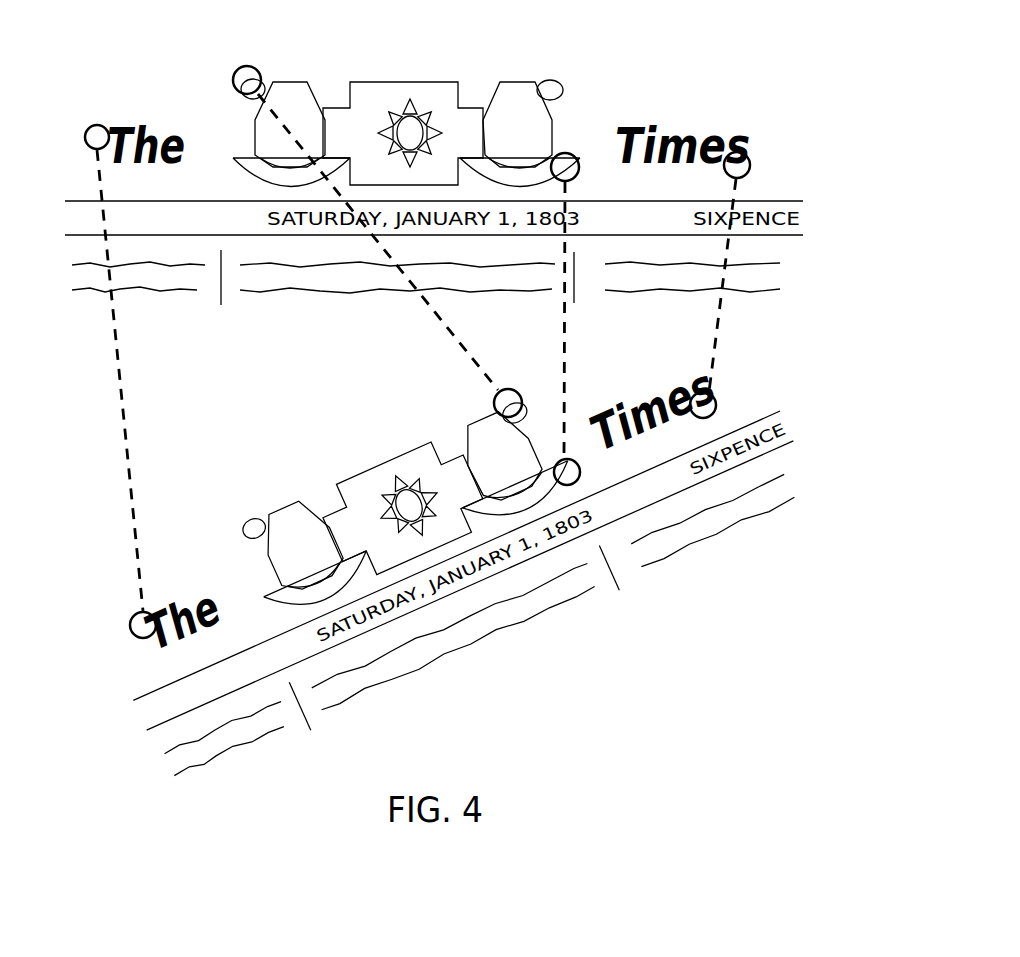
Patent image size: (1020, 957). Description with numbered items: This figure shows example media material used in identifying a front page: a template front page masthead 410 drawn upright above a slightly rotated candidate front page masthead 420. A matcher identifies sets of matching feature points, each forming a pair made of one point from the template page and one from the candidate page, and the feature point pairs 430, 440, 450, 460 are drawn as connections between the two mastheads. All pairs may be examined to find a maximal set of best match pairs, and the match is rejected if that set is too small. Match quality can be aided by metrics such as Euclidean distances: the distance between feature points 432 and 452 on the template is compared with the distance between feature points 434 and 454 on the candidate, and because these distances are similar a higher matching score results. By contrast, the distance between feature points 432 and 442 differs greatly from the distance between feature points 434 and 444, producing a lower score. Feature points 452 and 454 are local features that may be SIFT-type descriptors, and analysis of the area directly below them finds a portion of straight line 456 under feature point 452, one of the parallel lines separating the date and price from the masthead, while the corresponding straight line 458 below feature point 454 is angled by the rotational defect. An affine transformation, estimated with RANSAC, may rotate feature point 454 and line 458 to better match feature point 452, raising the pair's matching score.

The template front page masthead 410 is at (710, 98).
The candidate front page masthead 420 is at (765, 405).
The feature point pair 430 is at (131, 380).
The feature point 432 is at (95, 119).
The feature point 434 is at (122, 625).
The feature point pair 440 is at (378, 242).
The feature point 442 is at (242, 66).
The feature point 444 is at (487, 403).
The feature point pair 450 is at (578, 320).
The feature point 452 is at (584, 167).
The feature point 454 is at (586, 472).
The straight line 456 is at (587, 190).
The straight line 458 is at (592, 492).
The feature point pair 460 is at (721, 285).